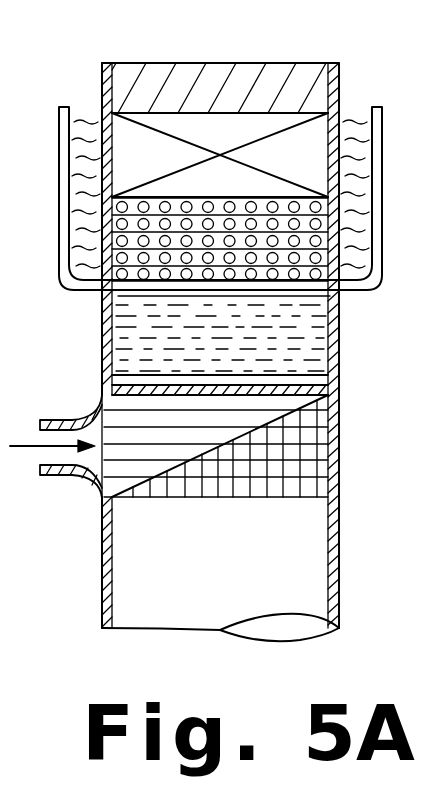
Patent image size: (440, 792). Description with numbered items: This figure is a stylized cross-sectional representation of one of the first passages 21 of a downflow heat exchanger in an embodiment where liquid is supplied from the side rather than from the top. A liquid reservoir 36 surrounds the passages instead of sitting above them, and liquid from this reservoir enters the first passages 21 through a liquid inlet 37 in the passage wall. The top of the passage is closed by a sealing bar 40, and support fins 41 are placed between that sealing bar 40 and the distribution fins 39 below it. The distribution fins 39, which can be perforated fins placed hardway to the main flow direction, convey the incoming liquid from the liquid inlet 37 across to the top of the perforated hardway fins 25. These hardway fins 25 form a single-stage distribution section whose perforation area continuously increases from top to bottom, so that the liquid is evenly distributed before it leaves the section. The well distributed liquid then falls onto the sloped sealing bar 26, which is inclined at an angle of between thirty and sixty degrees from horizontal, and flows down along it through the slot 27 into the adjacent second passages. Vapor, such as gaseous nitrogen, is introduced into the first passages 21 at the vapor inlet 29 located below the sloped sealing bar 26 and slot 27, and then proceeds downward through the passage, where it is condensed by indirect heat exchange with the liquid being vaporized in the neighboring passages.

The first passages 21 is at (93, 605).
The perforated hardway fins 25 is at (147, 327).
The sloped sealing bar 26 is at (160, 392).
The slot 27 is at (160, 380).
The vapor inlet 29 is at (35, 452).
The liquid reservoir 36 is at (88, 145).
The liquid inlet 37 is at (100, 208).
The distribution fins 39 is at (118, 254).
The sealing bar 40 is at (137, 62).
The support fins 41 is at (305, 134).